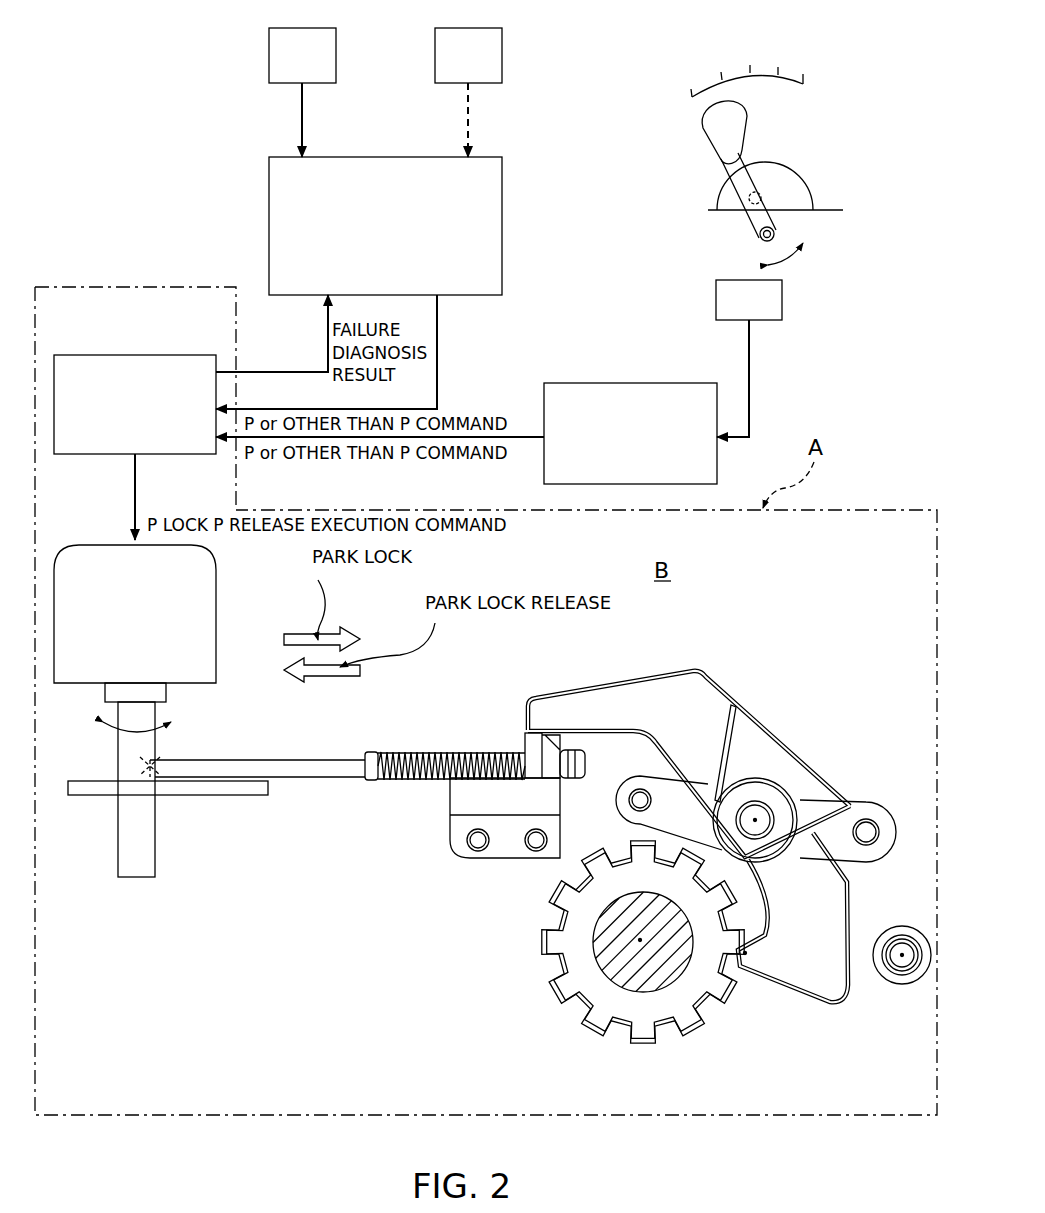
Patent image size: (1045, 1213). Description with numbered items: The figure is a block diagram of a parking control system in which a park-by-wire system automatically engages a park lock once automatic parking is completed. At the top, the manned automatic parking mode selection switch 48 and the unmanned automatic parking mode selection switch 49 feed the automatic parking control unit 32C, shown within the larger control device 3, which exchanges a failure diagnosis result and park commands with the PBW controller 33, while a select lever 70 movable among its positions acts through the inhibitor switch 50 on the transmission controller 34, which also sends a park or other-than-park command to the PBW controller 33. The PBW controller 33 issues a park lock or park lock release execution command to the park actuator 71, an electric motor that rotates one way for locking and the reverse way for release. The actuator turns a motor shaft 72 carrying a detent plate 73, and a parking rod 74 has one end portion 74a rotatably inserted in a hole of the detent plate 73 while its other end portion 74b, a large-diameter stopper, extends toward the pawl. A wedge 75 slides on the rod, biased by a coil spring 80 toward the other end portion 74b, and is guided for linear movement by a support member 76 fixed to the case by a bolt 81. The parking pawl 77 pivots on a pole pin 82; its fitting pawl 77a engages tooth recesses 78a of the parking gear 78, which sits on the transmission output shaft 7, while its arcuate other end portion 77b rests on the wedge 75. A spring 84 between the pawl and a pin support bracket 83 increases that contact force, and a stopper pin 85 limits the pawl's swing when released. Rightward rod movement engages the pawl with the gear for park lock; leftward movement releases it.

The manned automatic parking mode selection switch 48 is at (269, 55).
The unmanned automatic parking mode selection switch 49 is at (435, 55).
The automatic parking control unit 32C is at (269, 203).
The control device 3 is at (476, 231).
The PBW controller 33 is at (130, 355).
The transmission controller 34 is at (582, 383).
The select lever 70 is at (752, 132).
The inhibitor switch 50 is at (782, 300).
The park actuator 71 is at (216, 607).
The motor shaft 72 is at (158, 745).
The detent plate 73 is at (92, 795).
The parking rod 74 is at (258, 757).
The one end portion 74a is at (140, 765).
The other end portion 74b is at (578, 748).
The wedge 75 is at (522, 740).
The support member 76 is at (447, 828).
The parking pawl 77 is at (753, 746).
The fitting pawl 77a is at (745, 953).
The other end portion 77b is at (529, 722).
The parking gear 78 is at (540, 965).
The tooth recesses 78a is at (600, 1027).
The coil spring 80 is at (410, 757).
The bolt 81 is at (536, 848).
The pole pin 82 is at (755, 820).
The pin support bracket 83 is at (848, 800).
The spring 84 is at (858, 862).
The stopper pin 85 is at (902, 955).
The transmission output shaft 7 is at (640, 940).